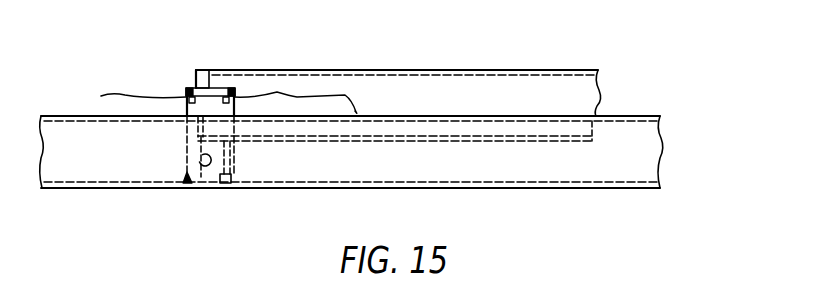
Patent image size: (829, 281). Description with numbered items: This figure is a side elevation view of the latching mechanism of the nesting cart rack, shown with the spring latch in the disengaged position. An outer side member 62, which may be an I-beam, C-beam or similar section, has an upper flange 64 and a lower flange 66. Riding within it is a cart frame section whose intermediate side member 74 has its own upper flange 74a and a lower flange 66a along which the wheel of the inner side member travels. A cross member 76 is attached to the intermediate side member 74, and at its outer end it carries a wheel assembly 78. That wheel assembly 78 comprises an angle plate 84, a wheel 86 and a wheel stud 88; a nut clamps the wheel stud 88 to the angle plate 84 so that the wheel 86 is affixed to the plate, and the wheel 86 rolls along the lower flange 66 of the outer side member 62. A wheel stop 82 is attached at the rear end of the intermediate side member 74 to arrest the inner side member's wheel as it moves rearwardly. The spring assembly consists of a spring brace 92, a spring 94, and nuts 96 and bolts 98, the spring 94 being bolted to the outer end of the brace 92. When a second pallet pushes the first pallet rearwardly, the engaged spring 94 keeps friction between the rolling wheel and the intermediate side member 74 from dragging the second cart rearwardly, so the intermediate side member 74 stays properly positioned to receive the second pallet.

The outer side member 62 is at (640, 148).
The upper flange 64 is at (644, 115).
The lower flange 66 is at (598, 190).
The lower flange 66a is at (503, 142).
The intermediate side member 74 is at (553, 88).
The upper flange 74a is at (482, 70).
The cross member 76 is at (218, 187).
The wheel assembly 78 is at (181, 160).
The wheel stop 82 is at (187, 89).
The angle plate 84 is at (183, 132).
The wheel 86 is at (201, 178).
The wheel stud 88 is at (183, 184).
The spring brace 92 is at (207, 88).
The spring 94 is at (325, 97).
The nuts 96 is at (127, 92).
The bolts 98 is at (194, 83).